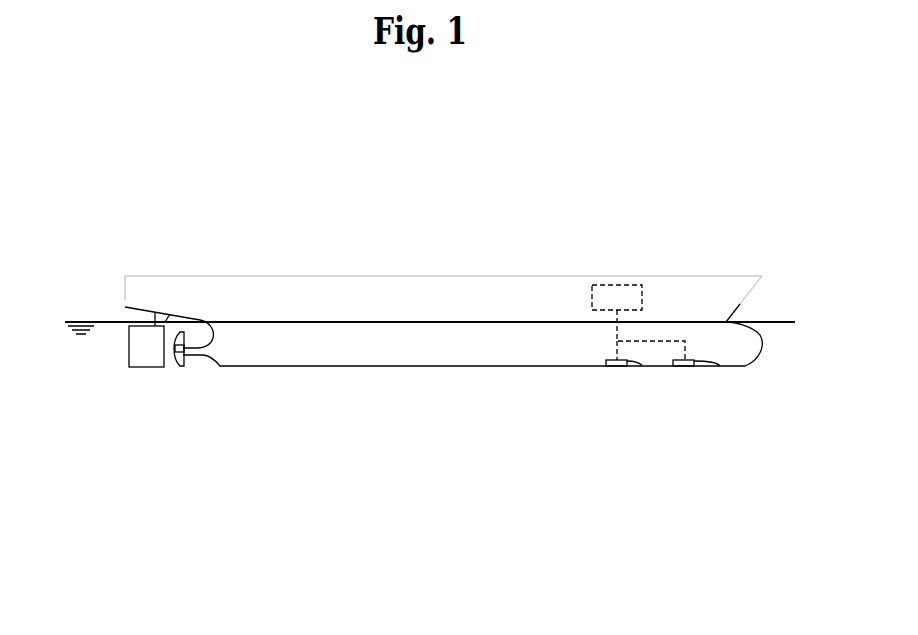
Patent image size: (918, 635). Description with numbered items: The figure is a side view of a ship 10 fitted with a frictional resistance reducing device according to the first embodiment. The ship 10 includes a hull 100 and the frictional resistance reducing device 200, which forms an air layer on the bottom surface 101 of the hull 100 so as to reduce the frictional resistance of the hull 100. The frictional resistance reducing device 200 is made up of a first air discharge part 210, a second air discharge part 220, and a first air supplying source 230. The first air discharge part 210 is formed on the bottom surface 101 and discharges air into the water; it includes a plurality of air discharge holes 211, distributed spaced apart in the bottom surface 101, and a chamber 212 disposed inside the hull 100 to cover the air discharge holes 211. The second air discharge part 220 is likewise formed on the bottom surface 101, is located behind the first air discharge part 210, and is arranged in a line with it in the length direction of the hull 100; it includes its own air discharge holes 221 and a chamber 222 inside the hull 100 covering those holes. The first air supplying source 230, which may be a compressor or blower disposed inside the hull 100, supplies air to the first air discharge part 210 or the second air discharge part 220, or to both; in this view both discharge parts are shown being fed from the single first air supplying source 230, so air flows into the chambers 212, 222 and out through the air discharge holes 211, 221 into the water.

The ship 10 is at (69, 128).
The hull 100 is at (328, 253).
The bottom surface 101 is at (367, 366).
The frictional resistance reducing device 200 is at (754, 524).
The first air discharge part 210 is at (723, 483).
The air discharge holes 211 is at (694, 366).
The chamber 212 is at (720, 366).
The second air discharge part 220 is at (638, 483).
The air discharge holes 221 is at (612, 366).
The chamber 222 is at (640, 366).
The first air supplying source 230 is at (616, 285).